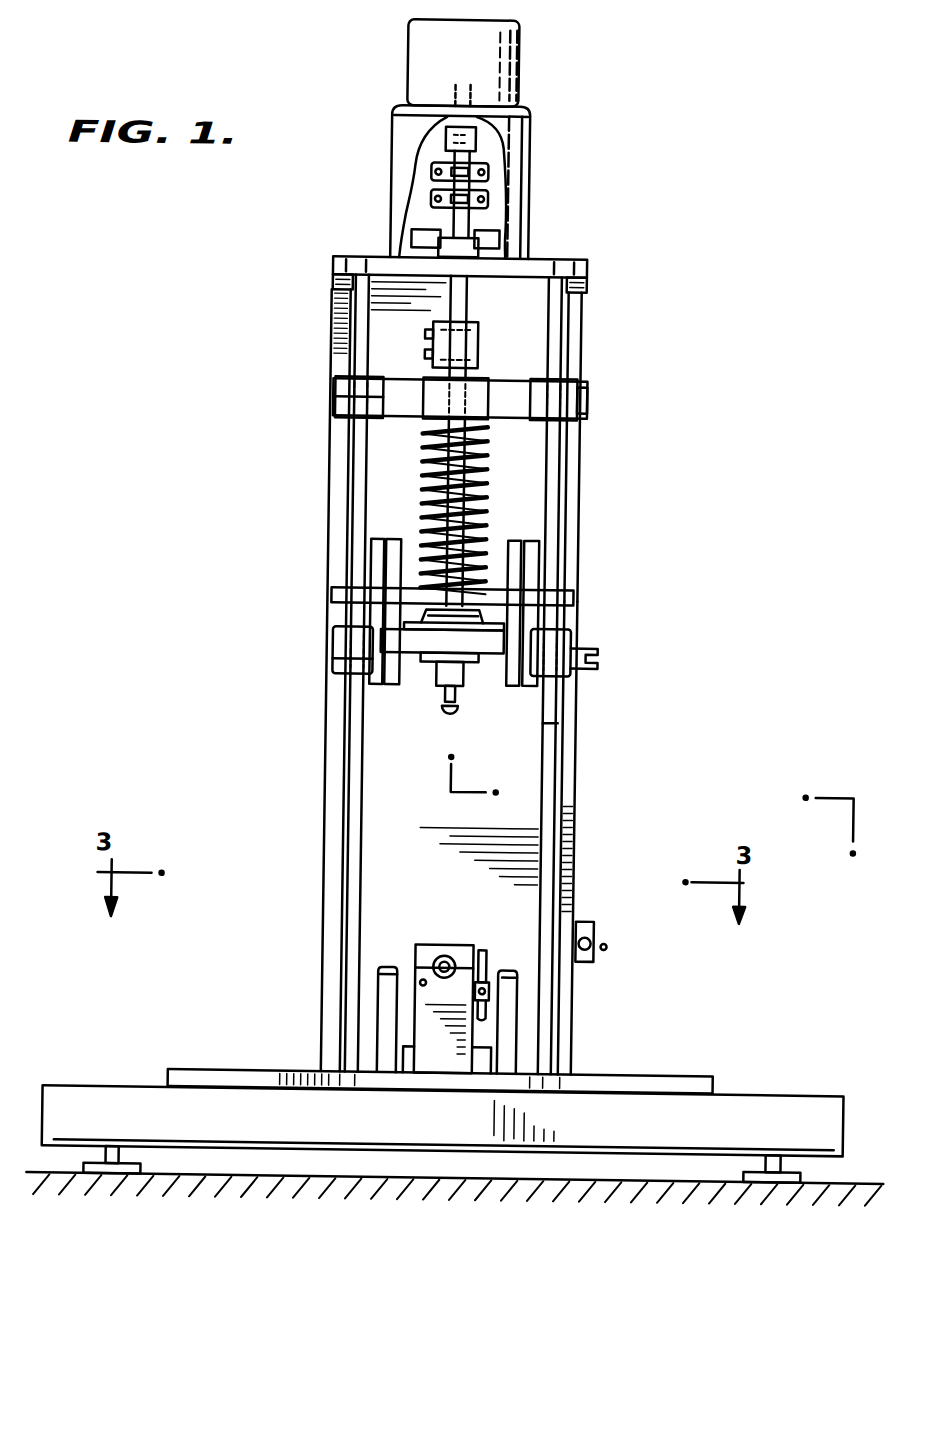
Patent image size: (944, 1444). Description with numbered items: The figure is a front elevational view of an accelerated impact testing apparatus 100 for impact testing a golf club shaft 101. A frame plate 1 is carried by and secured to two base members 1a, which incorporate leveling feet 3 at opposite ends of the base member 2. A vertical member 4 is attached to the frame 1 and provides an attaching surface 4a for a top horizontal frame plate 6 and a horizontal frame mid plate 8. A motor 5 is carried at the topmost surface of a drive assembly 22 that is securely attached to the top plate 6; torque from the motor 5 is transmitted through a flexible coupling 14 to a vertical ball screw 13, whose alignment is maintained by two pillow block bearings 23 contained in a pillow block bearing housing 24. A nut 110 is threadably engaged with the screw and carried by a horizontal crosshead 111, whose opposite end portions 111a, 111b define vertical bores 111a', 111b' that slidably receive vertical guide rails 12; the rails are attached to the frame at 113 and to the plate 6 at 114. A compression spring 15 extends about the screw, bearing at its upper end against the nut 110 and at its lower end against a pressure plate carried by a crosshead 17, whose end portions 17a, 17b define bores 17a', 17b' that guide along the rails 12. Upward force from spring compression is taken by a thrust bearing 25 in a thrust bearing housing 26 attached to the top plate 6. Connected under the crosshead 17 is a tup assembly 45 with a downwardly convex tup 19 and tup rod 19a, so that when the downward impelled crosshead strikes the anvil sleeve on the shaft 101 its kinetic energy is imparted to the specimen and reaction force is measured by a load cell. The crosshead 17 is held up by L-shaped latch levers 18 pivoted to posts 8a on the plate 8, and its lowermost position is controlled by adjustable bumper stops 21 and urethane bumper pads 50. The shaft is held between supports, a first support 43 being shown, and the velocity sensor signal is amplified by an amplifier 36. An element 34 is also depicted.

The frame plate 1 is at (699, 1076).
The base members 1a is at (258, 1120).
The leveling feet 3 is at (126, 1168).
The vertical member 4 is at (577, 790).
The attaching surface 4a is at (562, 460).
The motor 5 is at (397, 45).
The top horizontal frame plate 6 is at (522, 268).
The horizontal frame mid plate 8 is at (578, 597).
The posts 8a is at (368, 550).
The guide rails 12 is at (346, 327).
The vertical ball screw 13 is at (417, 488).
The flexible coupling 14 is at (436, 133).
The compression spring 15 is at (487, 497).
The crosshead 17 is at (380, 644).
The crosshead end portion 17a is at (294, 638).
The crosshead bore 17a' is at (297, 679).
The crosshead end portion 17b is at (616, 653).
The crosshead bore 17b' is at (640, 678).
The latch lever 18 is at (368, 572).
The tup 19 is at (456, 713).
The tup rod 19a is at (558, 722).
The adjustable bumper stops 21 is at (382, 996).
The drive assembly 22 is at (383, 155).
The pillow block bearings 23 is at (482, 172).
The pillow block bearing housing 24 is at (524, 215).
The thrust bearing 25 is at (430, 247).
The thrust bearing housing 26 is at (412, 232).
The anvil foot 34 is at (441, 1058).
The amplifier 36 is at (596, 918).
The shaft first support 43 is at (426, 945).
The tup assembly 45 is at (437, 679).
The bumper pads 50 is at (611, 946).
The apparatus 100 is at (307, 737).
The golf club shaft 101 is at (451, 955).
The nut 110 is at (565, 356).
The horizontal crosshead 111 is at (391, 419).
The crosshead end portion 111a is at (278, 399).
The vertical bore 111a' is at (287, 370).
The crosshead end portion 111b is at (620, 408).
The vertical bore 111b' is at (651, 384).
The guide rail frame attachment 113 is at (342, 1070).
The guide rail plate attachment 114 is at (339, 285).
The base member 2 is at (614, 183).